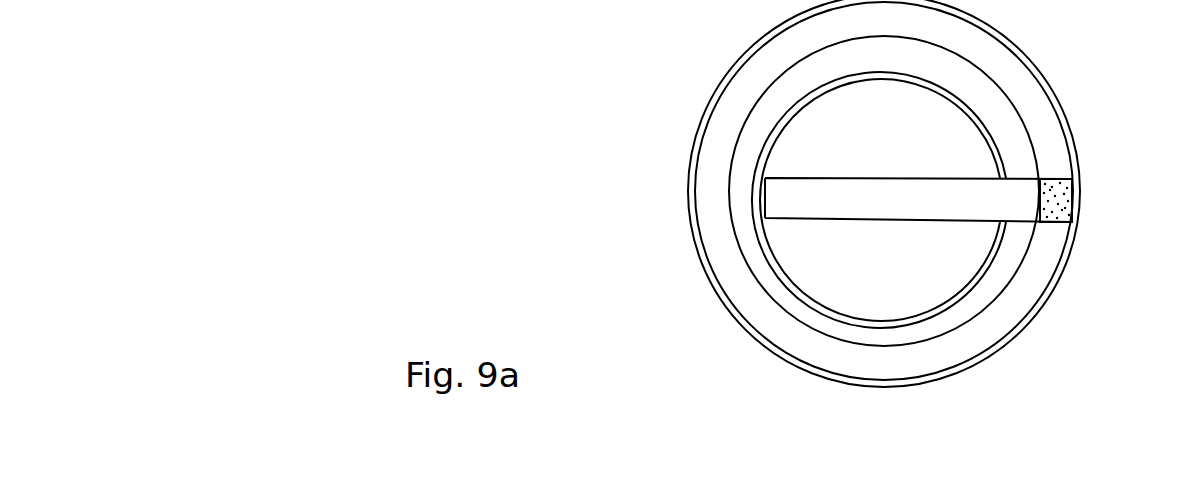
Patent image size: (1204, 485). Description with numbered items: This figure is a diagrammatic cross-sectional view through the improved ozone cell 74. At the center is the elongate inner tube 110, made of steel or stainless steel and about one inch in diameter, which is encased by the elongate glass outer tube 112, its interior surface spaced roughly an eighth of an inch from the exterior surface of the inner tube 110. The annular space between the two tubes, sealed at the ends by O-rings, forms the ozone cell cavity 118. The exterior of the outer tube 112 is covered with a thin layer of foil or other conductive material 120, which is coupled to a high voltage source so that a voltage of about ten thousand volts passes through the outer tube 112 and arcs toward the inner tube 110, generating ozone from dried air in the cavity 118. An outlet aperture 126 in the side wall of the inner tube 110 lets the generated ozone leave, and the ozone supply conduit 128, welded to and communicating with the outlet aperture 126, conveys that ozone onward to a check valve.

The ozone cell 74 is at (742, 408).
The inner tube 110 is at (767, 136).
The outer tube 112 is at (1040, 107).
The ozone cell cavity 118 is at (907, 31).
The conductive material 120 is at (1027, 318).
The outlet aperture 126 is at (987, 205).
The ozone supply conduit 128 is at (790, 218).